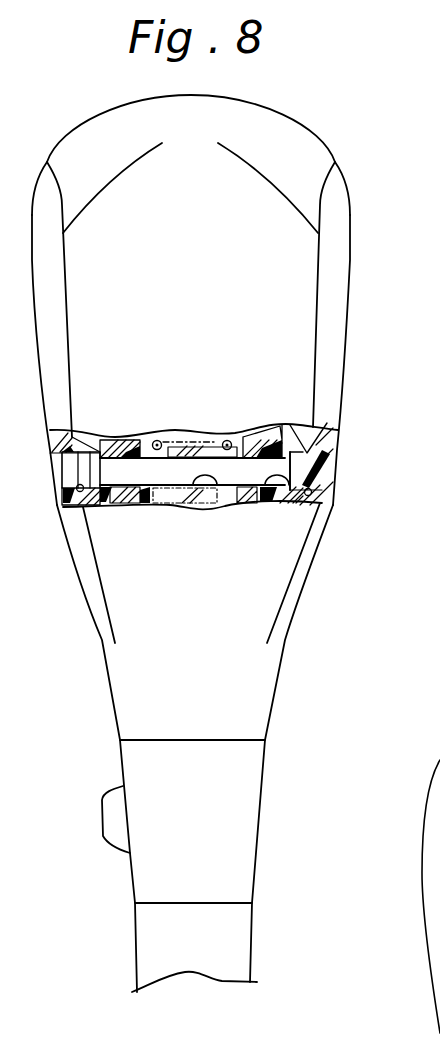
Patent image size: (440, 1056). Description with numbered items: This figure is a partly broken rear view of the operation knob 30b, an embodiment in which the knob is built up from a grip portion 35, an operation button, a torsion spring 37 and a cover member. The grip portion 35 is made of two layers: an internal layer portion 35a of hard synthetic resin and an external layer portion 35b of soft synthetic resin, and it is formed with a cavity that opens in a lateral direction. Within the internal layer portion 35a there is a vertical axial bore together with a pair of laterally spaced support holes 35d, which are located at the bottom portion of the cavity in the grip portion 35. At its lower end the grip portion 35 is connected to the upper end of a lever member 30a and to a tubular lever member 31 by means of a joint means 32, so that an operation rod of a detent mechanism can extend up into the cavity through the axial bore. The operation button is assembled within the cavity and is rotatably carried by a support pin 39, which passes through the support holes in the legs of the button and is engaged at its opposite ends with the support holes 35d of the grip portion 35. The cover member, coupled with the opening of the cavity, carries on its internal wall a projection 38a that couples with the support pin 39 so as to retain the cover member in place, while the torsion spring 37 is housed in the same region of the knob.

The lever member 30a is at (192, 748).
The operation knob 30b is at (355, 176).
The tubular lever member 31 is at (243, 930).
The joint means 32 is at (248, 775).
The grip portion 35 is at (352, 320).
The internal layer portion 35a is at (300, 427).
The external layer portion 35b is at (323, 453).
The support holes 35d is at (87, 509).
The torsion spring 37 is at (168, 441).
The projection 38a is at (222, 503).
The support pin 39 is at (165, 470).